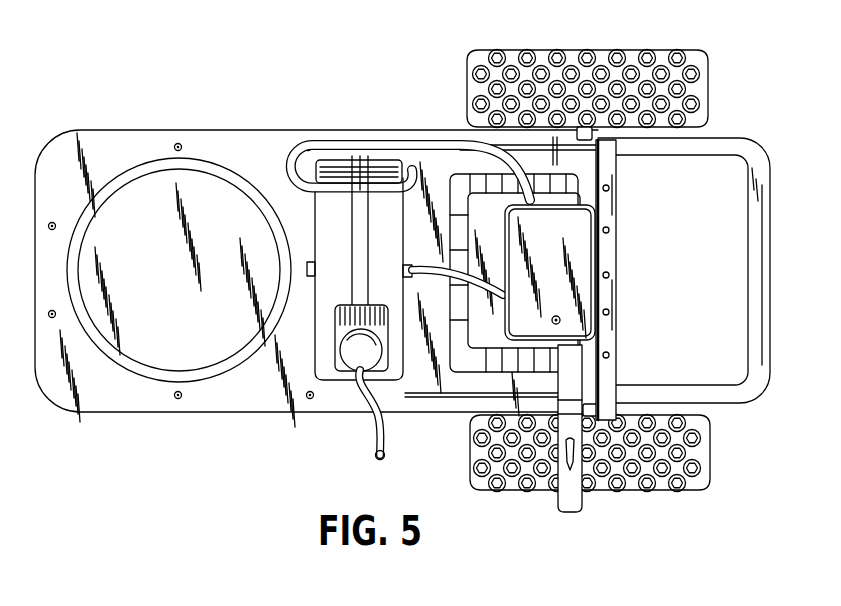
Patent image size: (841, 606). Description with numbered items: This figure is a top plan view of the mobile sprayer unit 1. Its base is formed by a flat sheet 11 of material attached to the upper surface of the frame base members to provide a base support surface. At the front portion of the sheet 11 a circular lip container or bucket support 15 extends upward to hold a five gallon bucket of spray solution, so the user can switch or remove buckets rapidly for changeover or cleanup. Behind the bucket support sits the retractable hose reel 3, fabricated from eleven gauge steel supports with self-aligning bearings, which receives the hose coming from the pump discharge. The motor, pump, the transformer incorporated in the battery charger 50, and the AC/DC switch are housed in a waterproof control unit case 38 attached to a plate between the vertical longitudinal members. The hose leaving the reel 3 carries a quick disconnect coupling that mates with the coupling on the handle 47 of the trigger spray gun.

The vehicle 1 is at (382, 84).
The retractable hose reel 3 is at (325, 320).
The flat sheet 11 is at (258, 150).
The circular lip container or bucket support 15 is at (157, 158).
The water proof control unit case 38 is at (553, 262).
The handle 47 is at (562, 500).
The battery charger 50 is at (477, 337).